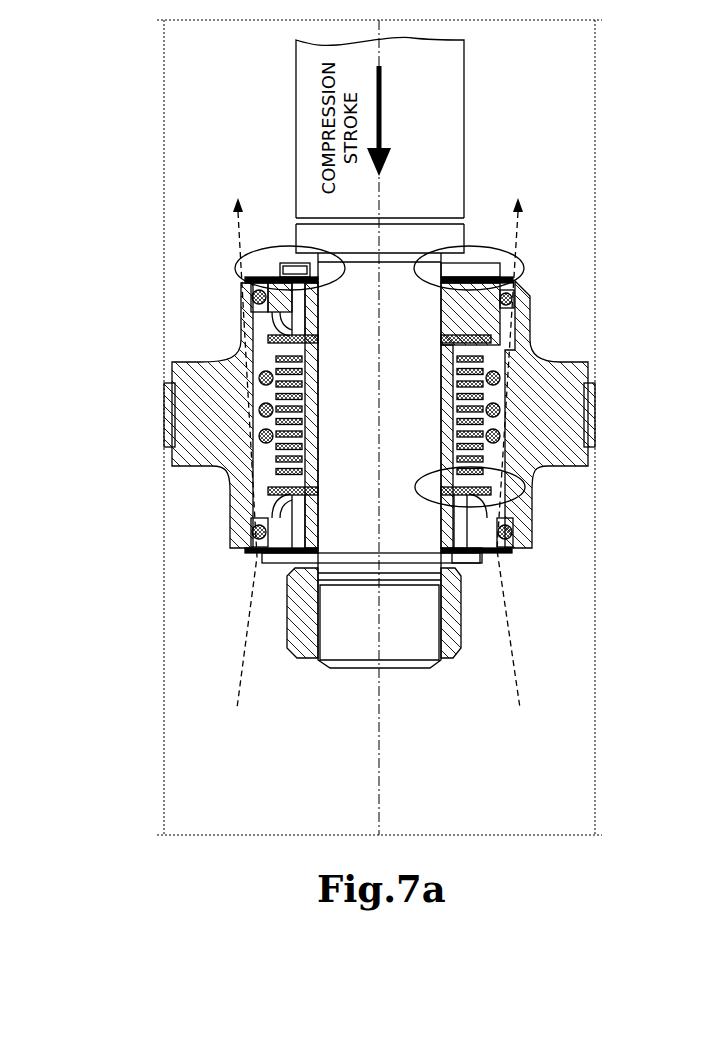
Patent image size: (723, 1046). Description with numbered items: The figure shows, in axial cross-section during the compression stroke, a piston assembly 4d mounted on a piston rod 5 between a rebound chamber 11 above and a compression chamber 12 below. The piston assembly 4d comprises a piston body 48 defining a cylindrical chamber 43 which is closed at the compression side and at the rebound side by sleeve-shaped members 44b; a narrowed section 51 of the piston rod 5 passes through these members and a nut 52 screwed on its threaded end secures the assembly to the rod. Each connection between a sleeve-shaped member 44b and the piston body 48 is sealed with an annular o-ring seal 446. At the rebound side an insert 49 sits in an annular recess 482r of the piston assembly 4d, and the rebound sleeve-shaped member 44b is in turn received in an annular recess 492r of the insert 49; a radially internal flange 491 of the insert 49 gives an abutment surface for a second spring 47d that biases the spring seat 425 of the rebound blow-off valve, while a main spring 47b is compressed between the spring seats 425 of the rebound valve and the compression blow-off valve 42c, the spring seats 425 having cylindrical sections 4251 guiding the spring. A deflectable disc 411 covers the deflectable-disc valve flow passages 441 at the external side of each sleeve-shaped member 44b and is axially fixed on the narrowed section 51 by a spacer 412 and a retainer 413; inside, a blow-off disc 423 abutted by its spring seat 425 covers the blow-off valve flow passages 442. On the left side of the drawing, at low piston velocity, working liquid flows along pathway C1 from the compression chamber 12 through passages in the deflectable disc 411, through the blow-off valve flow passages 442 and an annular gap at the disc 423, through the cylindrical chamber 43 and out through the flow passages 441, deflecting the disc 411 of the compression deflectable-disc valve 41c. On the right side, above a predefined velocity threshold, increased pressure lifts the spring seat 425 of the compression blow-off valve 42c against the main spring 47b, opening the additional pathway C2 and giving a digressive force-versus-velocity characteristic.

The rebound chamber 11 is at (243, 68).
The compression chamber 12 is at (240, 765).
The piston rod 5 is at (298, 135).
The retainer 413 is at (282, 265).
The deflectable disc 411 is at (252, 278).
The compression deflectable-disc valve 41c is at (238, 266).
The sleeve-shaped member 44b is at (252, 290).
The deflectable-disc valve flow passages 441 is at (252, 305).
The annular o-ring seal 446 is at (258, 297).
The second spring 47d is at (270, 326).
The main spring 47b is at (270, 339).
The cylindrical chamber 43 is at (212, 372).
The insert 49 is at (262, 385).
The radially internal flange 491 is at (262, 418).
The deflectable disc 423 is at (272, 458).
The blow-off valve flow passages 442 is at (262, 497).
The piston body 48 is at (250, 490).
The spacer 412 is at (280, 560).
The narrowed section 51 is at (300, 598).
The nut 52 is at (325, 622).
The annular recess 492r is at (535, 310).
The annular recess 482r is at (538, 325).
The spring seat 425 is at (520, 360).
The cylindrical section 4251 is at (585, 416).
The compression blow-off valve 42c is at (526, 476).
The piston assembly 4d is at (556, 498).
The pathway C1 is at (238, 472).
The additional pathway C2 is at (517, 472).